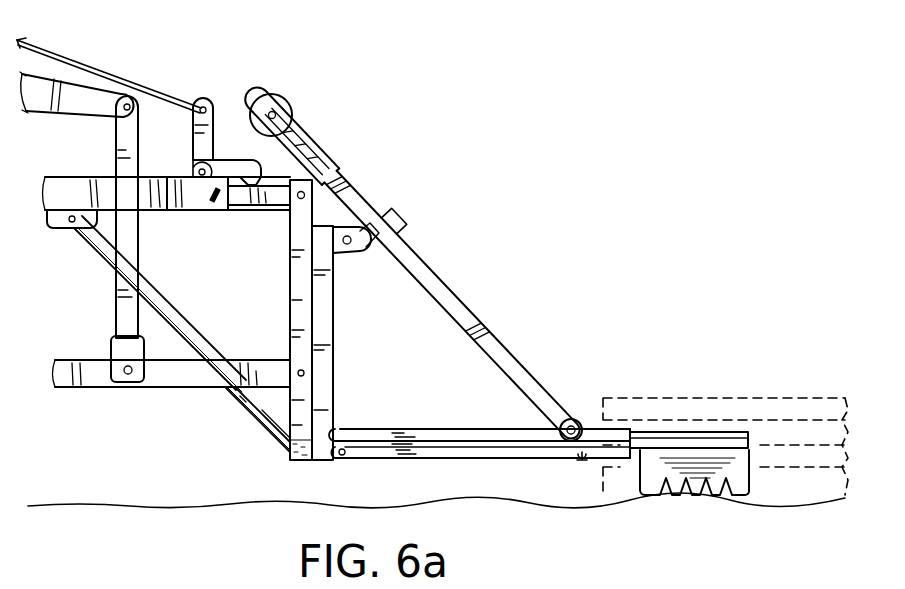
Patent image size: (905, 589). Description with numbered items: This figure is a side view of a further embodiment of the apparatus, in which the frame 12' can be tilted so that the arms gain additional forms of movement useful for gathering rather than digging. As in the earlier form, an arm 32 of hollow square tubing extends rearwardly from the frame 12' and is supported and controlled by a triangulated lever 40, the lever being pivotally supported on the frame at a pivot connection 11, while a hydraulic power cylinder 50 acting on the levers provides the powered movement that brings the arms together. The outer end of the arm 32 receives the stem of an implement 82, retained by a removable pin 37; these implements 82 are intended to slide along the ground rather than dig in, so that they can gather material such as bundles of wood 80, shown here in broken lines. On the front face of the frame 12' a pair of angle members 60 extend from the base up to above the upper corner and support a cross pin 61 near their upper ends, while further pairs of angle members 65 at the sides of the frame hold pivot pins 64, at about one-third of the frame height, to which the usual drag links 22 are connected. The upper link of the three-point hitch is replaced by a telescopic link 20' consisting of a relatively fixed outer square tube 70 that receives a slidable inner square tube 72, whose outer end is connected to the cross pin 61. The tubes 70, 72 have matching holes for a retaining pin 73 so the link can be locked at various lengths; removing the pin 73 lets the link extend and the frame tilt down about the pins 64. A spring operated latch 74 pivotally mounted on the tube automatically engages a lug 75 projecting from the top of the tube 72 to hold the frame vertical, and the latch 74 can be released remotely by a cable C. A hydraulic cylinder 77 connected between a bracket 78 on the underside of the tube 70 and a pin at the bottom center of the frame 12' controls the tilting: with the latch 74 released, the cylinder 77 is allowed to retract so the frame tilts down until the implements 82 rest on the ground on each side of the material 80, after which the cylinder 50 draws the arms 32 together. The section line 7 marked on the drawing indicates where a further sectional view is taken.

The cable C is at (98, 58).
The spring operated latch 74 is at (210, 128).
The lug 75 is at (246, 175).
The hydraulic power cylinder 50 is at (289, 96).
The cross pin 61 is at (306, 193).
The telescopic link 20' is at (166, 169).
The outer square tube 70 is at (194, 208).
The retaining pin 73 is at (219, 208).
The inner square tube 72 is at (259, 210).
The bracket 78 is at (68, 227).
The hydraulic cylinder 77 is at (100, 258).
The angle members 60 is at (292, 308).
The lever 40 is at (440, 272).
The hinge bracket 11 is at (340, 256).
The frame 12' is at (363, 343).
The pivot pins 64 is at (305, 373).
The drag links 22 is at (67, 393).
The angle members 65 is at (290, 408).
The arm 32 is at (447, 448).
The bundles of wood 80 is at (762, 412).
The removable pin 37 is at (582, 462).
The implements 82 is at (697, 490).
The section line 7 is at (291, 163).